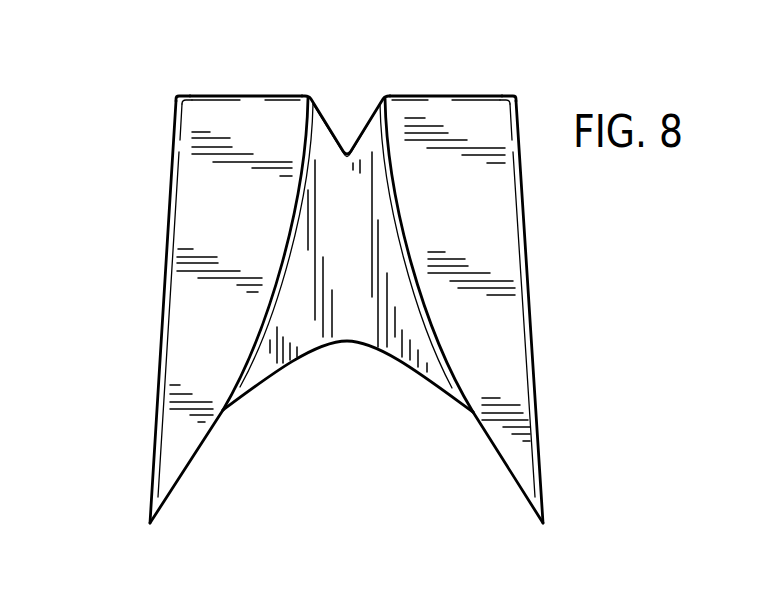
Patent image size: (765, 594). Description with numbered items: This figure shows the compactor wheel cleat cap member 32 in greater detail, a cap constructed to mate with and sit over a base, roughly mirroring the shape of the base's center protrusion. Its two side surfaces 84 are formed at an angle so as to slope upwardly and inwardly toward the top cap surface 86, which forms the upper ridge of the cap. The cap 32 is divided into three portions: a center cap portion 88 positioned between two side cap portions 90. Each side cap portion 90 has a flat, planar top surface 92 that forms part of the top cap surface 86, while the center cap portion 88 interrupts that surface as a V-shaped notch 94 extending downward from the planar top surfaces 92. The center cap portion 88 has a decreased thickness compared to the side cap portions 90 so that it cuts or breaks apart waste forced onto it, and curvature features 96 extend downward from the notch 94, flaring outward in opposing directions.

The cap member 32 is at (133, 68).
The side surfaces 84 is at (163, 311).
The top cap surface 86 is at (506, 45).
The center cap portion 88 is at (353, 70).
The side cap portions 90 is at (196, 77).
The top surface 92 is at (244, 96).
The V-shaped notch 94 is at (347, 127).
The curvature features 96 is at (402, 289).